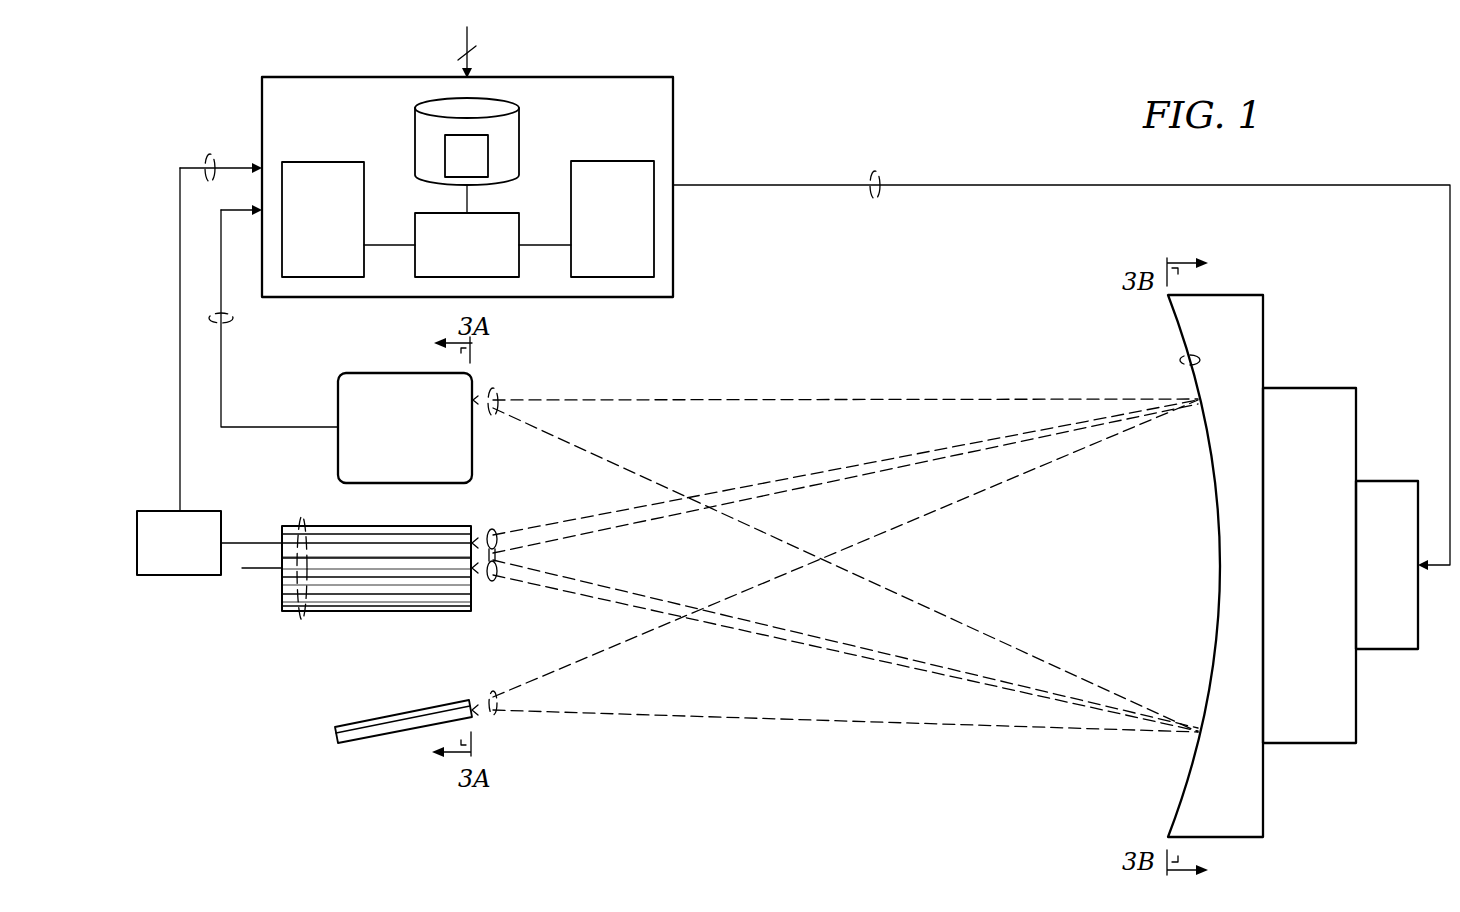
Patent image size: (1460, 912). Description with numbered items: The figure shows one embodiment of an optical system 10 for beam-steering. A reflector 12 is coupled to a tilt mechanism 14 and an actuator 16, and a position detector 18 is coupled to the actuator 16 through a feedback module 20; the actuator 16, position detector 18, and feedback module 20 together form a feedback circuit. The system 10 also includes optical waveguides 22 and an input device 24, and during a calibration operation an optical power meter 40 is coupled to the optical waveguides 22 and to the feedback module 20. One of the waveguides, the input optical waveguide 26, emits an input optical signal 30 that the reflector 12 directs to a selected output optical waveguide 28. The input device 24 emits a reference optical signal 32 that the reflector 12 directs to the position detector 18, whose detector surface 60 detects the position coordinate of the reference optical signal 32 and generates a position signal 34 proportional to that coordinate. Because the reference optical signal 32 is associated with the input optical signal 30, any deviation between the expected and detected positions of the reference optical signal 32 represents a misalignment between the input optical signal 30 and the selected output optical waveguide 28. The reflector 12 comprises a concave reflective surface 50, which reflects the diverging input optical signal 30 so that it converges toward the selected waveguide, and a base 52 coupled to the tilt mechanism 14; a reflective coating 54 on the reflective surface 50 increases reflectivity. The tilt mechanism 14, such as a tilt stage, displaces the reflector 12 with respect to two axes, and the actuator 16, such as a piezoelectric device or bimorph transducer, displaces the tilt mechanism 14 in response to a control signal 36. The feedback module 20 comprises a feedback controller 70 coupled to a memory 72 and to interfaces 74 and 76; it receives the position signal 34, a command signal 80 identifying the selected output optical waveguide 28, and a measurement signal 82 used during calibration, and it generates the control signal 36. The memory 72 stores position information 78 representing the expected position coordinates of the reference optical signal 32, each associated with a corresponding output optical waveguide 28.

The optical system 10 is at (1016, 121).
The reflector 12 is at (1209, 817).
The tilt mechanism 14 is at (1297, 577).
The actuator 16 is at (1377, 577).
The position detector 18 is at (392, 440).
The feedback module 20 is at (550, 76).
The optical waveguides 22 is at (302, 518).
The input device 24 is at (380, 744).
The input optical waveguide 26 is at (262, 572).
The output optical waveguide 28 is at (253, 540).
The input optical signal 30 is at (496, 583).
The reference optical signal 32 is at (495, 388).
The position signal 34 is at (234, 318).
The control signal 36 is at (877, 200).
The optical power meter 40 is at (166, 555).
The concave reflective surface 50 is at (1219, 560).
The base 52 is at (1265, 327).
The reflective coating 54 is at (1180, 360).
The detector surface 60 is at (474, 433).
The feedback controller 70 is at (454, 255).
The memory 72 is at (412, 136).
The interface 74 is at (310, 223).
The interface 76 is at (599, 223).
The position information 78 is at (490, 155).
The command signal 80 is at (463, 38).
The measurement signal 82 is at (208, 152).